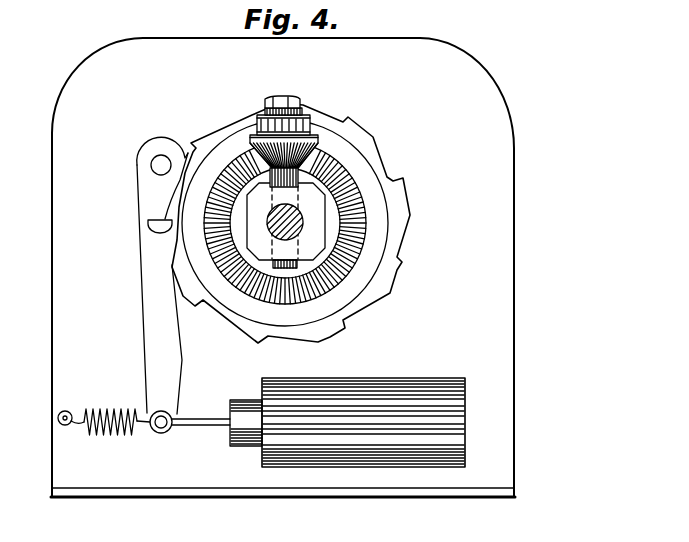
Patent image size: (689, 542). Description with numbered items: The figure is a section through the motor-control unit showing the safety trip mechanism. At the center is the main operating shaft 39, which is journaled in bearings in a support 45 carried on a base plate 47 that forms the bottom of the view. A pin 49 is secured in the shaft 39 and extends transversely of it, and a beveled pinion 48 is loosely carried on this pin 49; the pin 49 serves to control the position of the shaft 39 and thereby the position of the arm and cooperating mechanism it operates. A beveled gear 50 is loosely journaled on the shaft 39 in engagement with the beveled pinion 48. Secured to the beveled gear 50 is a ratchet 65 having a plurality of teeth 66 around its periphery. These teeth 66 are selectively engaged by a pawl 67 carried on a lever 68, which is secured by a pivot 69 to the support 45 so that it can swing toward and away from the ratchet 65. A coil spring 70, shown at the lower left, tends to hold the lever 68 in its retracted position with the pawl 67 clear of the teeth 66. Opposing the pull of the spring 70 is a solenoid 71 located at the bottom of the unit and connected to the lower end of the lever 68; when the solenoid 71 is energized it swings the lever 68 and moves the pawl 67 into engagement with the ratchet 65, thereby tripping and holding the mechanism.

The main operating shaft 39 is at (298, 234).
The support 45 is at (505, 289).
The base plate 47 is at (278, 498).
The beveled pinion 48 is at (258, 153).
The pin 49 is at (298, 172).
The beveled gear 50 is at (285, 225).
The ratchet 65 is at (380, 205).
The teeth 66 is at (345, 121).
The pawl 67 is at (149, 226).
The lever 68 is at (150, 313).
The pivot 69 is at (161, 164).
The coil spring 70 is at (108, 434).
The solenoid 71 is at (355, 456).